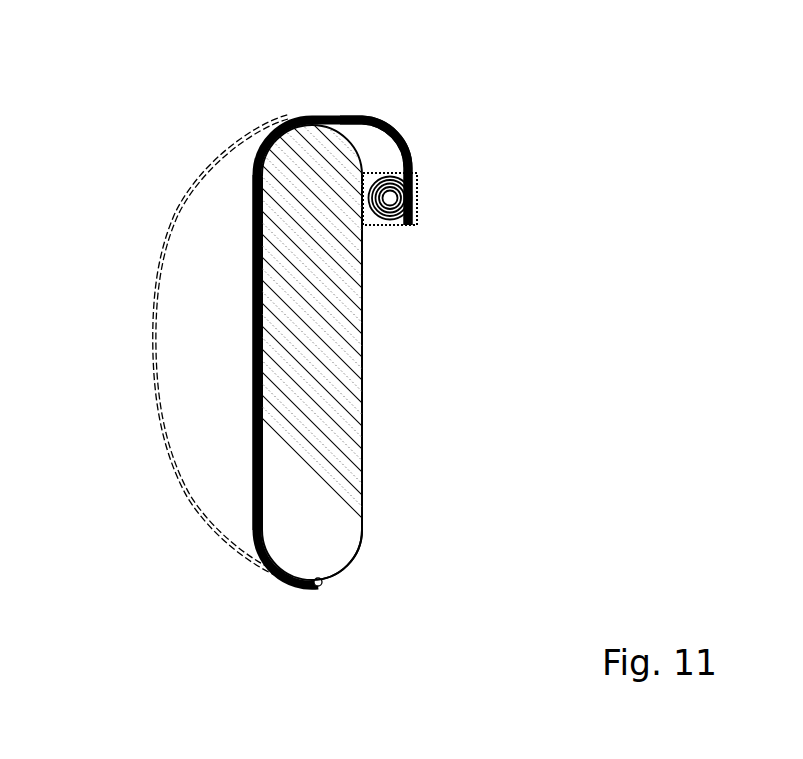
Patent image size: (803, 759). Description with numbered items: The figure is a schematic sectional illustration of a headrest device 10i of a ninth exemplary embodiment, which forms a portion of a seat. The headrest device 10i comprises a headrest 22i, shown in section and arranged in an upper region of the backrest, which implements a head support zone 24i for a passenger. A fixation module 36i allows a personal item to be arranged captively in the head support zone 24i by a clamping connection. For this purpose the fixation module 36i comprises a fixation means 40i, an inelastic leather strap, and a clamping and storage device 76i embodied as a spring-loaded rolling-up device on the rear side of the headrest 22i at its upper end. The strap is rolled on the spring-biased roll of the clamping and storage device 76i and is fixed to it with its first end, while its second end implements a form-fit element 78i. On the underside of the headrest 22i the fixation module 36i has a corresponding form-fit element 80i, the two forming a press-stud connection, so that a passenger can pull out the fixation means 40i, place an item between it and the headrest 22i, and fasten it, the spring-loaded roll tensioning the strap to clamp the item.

The headrest device 10i is at (163, 203).
The fixation module 36i is at (407, 111).
The fixation means 40i is at (398, 136).
The head support zone 24i is at (252, 317).
The headrest 22i is at (302, 442).
The clamping and storage device 76i is at (409, 229).
The form-fit element 78i is at (318, 588).
The form-fit element 80i is at (335, 579).